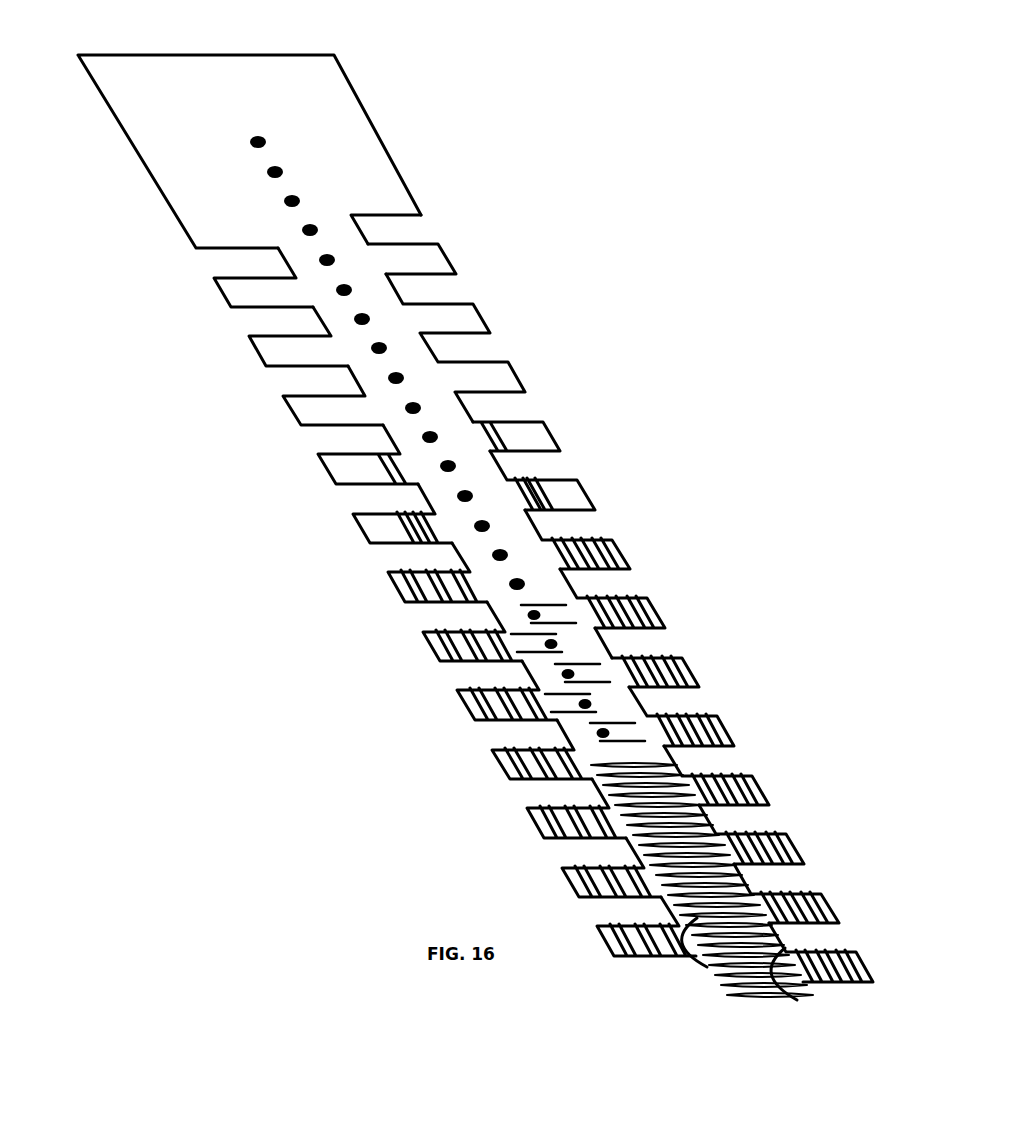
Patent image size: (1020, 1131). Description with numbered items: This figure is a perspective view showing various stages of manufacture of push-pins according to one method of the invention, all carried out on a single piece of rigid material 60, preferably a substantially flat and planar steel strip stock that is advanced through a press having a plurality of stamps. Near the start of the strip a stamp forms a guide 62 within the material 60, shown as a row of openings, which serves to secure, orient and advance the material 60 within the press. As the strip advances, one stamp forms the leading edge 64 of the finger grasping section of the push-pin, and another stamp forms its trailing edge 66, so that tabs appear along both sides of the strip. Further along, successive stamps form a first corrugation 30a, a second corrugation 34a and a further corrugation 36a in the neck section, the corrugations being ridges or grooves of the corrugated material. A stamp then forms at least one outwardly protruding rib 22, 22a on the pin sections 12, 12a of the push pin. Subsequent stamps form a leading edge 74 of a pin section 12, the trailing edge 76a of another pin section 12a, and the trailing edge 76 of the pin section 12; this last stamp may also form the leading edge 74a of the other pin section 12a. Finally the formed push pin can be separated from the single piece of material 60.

The material 60 is at (355, 83).
The guide 62 is at (265, 142).
The leading edge 64 is at (398, 214).
The trailing edge 66 is at (417, 247).
The first corrugation 30a is at (493, 430).
The second corrugation 34a is at (560, 497).
The fourth corrugation 36a is at (605, 558).
The outwardly protruding rib 22a is at (628, 660).
The outwardly protruding rib 22 is at (657, 677).
The leading edge 74 is at (663, 728).
The leading edge 74a is at (625, 838).
The trailing edge 76a is at (667, 777).
The trailing edge 76 is at (710, 838).
The pin section 12a is at (727, 973).
The pin section 12 is at (755, 990).